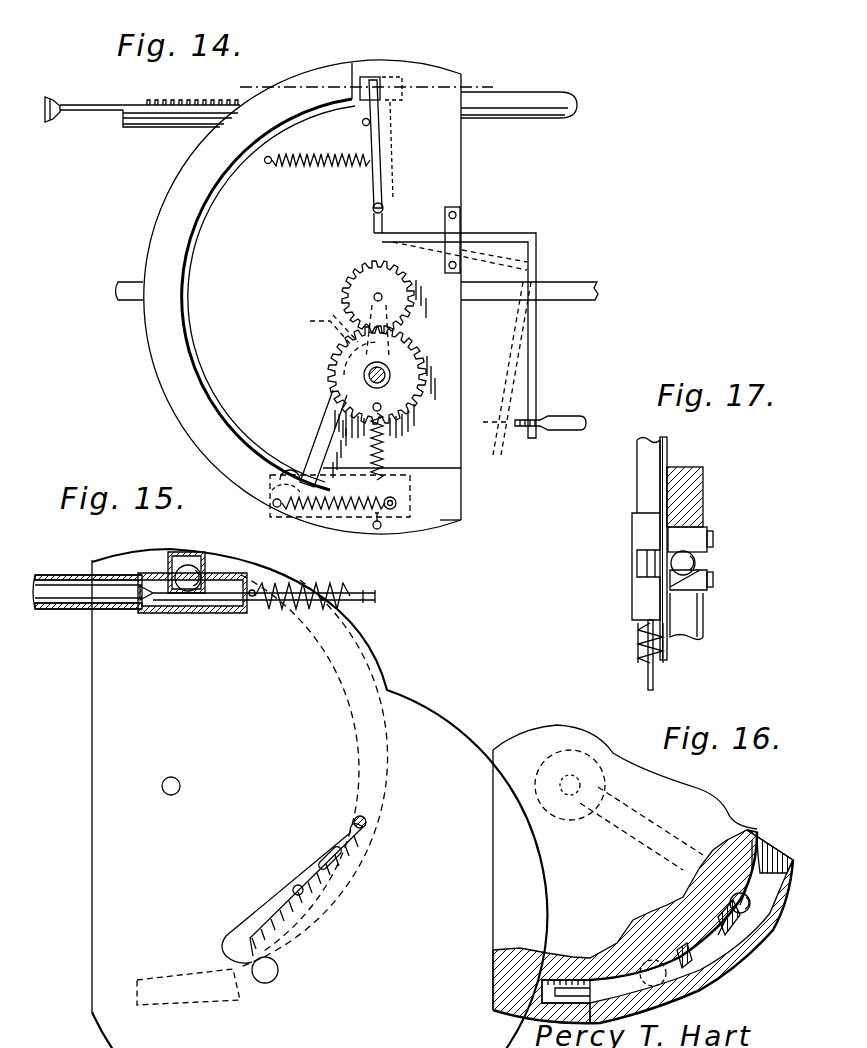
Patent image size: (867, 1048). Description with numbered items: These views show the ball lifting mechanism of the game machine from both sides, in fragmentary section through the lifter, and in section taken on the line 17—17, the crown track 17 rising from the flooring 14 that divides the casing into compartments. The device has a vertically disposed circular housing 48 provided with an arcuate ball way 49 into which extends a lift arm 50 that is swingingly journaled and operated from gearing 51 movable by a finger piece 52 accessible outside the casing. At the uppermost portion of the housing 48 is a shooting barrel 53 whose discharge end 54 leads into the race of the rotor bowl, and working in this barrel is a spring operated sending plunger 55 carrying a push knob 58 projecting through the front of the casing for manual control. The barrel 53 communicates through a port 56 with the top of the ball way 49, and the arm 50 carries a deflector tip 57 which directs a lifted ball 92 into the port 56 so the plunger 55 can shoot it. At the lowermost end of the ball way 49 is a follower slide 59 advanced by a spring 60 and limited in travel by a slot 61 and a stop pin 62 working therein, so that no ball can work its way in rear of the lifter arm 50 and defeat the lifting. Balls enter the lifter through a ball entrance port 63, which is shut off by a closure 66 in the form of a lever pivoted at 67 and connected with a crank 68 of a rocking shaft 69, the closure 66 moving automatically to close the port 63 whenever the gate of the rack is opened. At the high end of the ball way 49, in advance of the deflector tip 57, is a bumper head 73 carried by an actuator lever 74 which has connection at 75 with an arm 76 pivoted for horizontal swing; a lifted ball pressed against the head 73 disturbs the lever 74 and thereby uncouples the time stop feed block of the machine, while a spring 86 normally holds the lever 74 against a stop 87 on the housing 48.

In FIG. 14, the flooring 14 is at (600, 292).
In FIG. 14, the track 17 is at (367, 85).
In FIG. 14, the housing 48 is at (160, 229).
In FIG. 15, the housing 48 is at (95, 733).
In FIG. 16, the housing 48 is at (720, 813).
In FIG. 14, the ball way 49 is at (197, 377).
In FIG. 15, the ball way 49 is at (385, 681).
In FIG. 17, the ball way 49 is at (690, 633).
In FIG. 16, the ball way 49 is at (770, 853).
In FIG. 14, the lift arm 50 is at (332, 410).
In FIG. 17, the lift arm 50 is at (713, 573).
In FIG. 16, the lift arm 50 is at (620, 847).
In FIG. 14, the gearing 51 is at (350, 288).
In FIG. 14, the finger piece 52 is at (335, 340).
In FIG. 14, the shooting barrel 53 is at (167, 100).
In FIG. 15, the shooting barrel 53 is at (55, 599).
In FIG. 17, the shooting barrel 53 is at (640, 486).
In FIG. 14, the discharge end 54 is at (577, 111).
In FIG. 14, the sending plunger 55 is at (101, 112).
In FIG. 15, the sending plunger 55 is at (218, 602).
In FIG. 17, the sending plunger 55 is at (647, 672).
In FIG. 15, the port 56 is at (185, 552).
In FIG. 17, the deflector tip 57 is at (690, 590).
In FIG. 16, the deflector tip 57 is at (735, 916).
In FIG. 14, the push knob 58 is at (52, 97).
In FIG. 16, the follower slide 59 is at (690, 996).
In FIG. 14, the spring 60 is at (322, 511).
In FIG. 14, the slot 61 is at (391, 510).
In FIG. 16, the slot 61 is at (570, 990).
In FIG. 14, the stop pin 62 is at (403, 517).
In FIG. 15, the ball entrance port 63 is at (271, 983).
In FIG. 16, the ball entrance port 63 is at (647, 968).
In FIG. 15, the closure 66 is at (228, 926).
In FIG. 17, the closure 66 is at (660, 572).
In FIG. 15, the pivot 67 is at (294, 886).
In FIG. 15, the crank 68 is at (350, 835).
In FIG. 15, the rocking shaft 69 is at (357, 818).
In FIG. 14, the bumper head 73 is at (363, 76).
In FIG. 17, the bumper head 73 is at (696, 536).
In FIG. 14, the actuator lever 74 is at (381, 147).
In FIG. 17, the actuator lever 74 is at (715, 533).
In FIG. 14, the connection 75 is at (540, 435).
In FIG. 14, the arm 76 is at (566, 416).
In FIG. 14, the spring 86 is at (302, 168).
In FIG. 14, the stop 87 is at (362, 124).
In FIG. 14, the ball 92 is at (290, 470).
In FIG. 15, the ball 92 is at (185, 588).
In FIG. 17, the ball 92 is at (670, 560).
In FIG. 16, the ball 92 is at (750, 909).